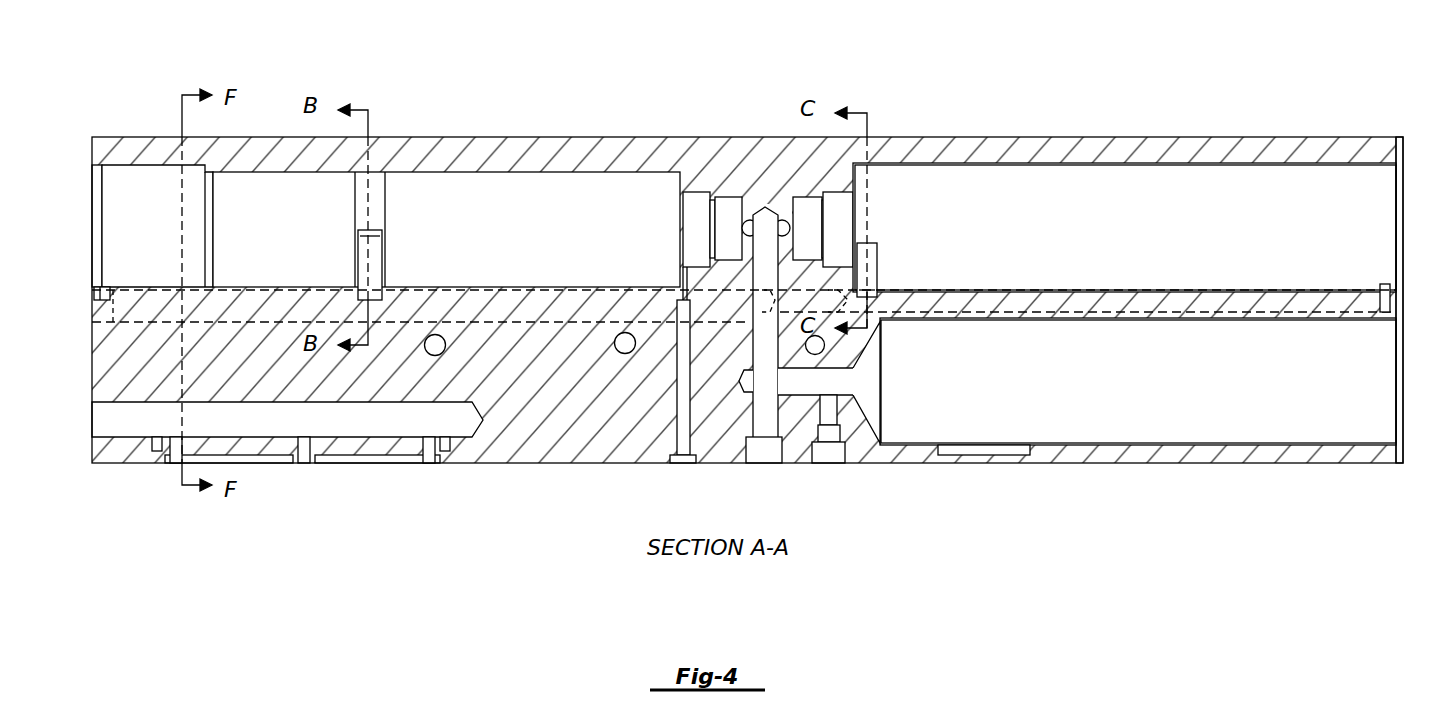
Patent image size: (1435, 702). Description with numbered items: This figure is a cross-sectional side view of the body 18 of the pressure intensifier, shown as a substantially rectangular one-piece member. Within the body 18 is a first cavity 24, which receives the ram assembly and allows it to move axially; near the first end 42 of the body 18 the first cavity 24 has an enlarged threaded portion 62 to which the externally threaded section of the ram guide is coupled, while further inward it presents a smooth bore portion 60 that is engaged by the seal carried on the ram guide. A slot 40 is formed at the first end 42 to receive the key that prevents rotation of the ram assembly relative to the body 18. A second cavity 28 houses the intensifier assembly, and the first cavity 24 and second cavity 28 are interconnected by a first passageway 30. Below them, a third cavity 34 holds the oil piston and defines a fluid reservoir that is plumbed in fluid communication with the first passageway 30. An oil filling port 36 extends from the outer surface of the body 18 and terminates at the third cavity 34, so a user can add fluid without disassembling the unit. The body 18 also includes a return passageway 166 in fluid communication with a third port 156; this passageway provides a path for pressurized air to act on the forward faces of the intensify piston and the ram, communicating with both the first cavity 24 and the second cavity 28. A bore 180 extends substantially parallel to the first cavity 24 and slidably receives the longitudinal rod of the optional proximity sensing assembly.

The body 18 is at (748, 150).
The first cavity 24 is at (533, 241).
The second cavity 28 is at (973, 249).
The first passageway 30 is at (757, 348).
The third cavity 34 is at (977, 394).
The oil filling port 36 is at (830, 465).
The slot 40 is at (100, 288).
The first end 42 is at (78, 128).
The smooth bore portion 60 is at (305, 287).
The enlarged threaded portion 62 is at (146, 178).
The third port 156 is at (1378, 300).
The return passageway 166 is at (1082, 310).
The bore 180 is at (392, 438).